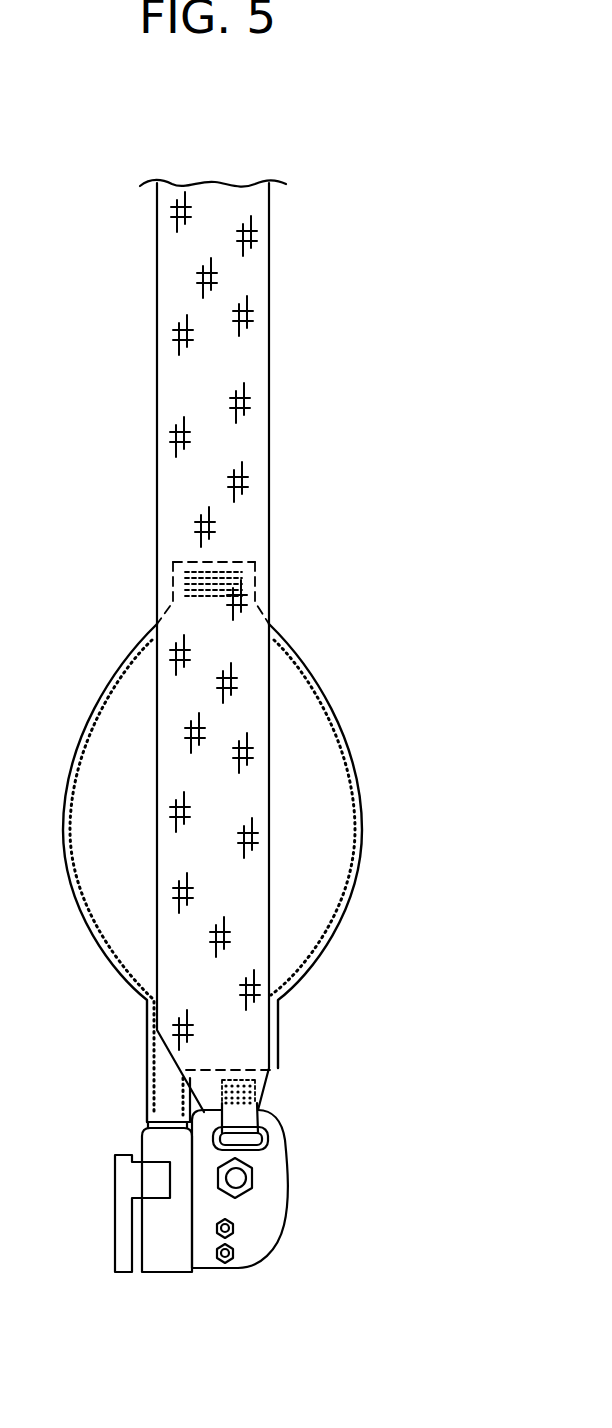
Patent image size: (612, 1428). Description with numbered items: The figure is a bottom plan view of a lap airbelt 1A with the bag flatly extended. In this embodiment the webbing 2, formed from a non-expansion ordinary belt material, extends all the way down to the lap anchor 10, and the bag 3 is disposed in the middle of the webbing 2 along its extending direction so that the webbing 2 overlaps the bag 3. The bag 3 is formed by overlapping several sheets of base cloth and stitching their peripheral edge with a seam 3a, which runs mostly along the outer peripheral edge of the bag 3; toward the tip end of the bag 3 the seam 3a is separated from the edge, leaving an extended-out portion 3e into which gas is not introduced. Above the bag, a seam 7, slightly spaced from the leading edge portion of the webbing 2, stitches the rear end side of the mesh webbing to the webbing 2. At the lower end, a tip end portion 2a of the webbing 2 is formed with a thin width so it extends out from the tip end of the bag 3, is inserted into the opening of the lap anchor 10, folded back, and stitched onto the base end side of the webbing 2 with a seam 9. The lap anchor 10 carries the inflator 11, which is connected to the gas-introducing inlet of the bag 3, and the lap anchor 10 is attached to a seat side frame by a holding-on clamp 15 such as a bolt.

The lap airbelt 1A is at (356, 477).
The webbing 2 is at (258, 363).
The tip end portion of the webbing 2a is at (268, 1100).
The bag 3 is at (252, 873).
The seam 3a is at (76, 808).
The extended-out portion 3e is at (276, 1033).
The seam 7 is at (240, 577).
The seam 9 is at (237, 1092).
The lap anchor 10 is at (250, 1222).
The inflator 11 is at (154, 1142).
The holding-on clamp 15 is at (240, 1178).